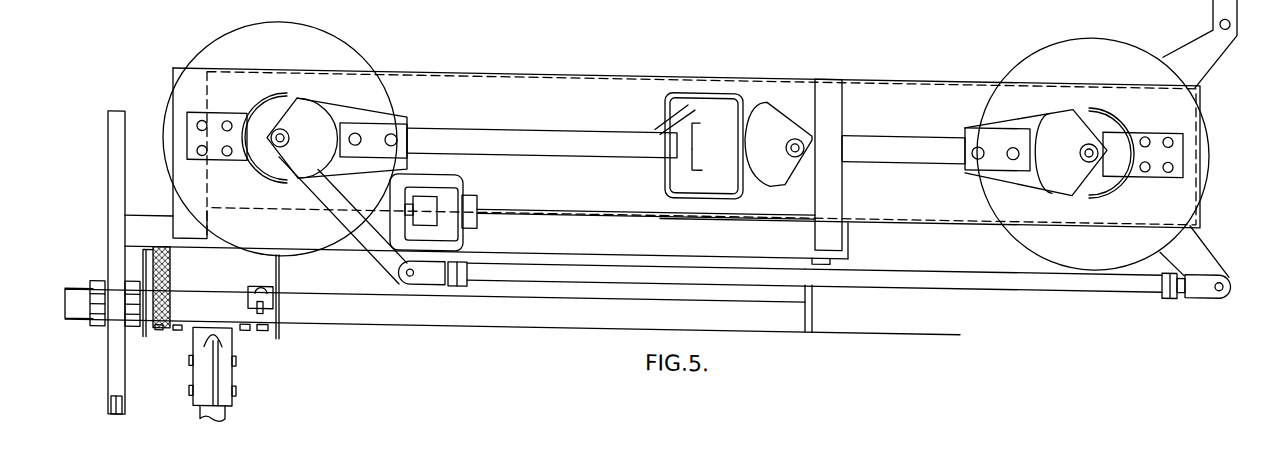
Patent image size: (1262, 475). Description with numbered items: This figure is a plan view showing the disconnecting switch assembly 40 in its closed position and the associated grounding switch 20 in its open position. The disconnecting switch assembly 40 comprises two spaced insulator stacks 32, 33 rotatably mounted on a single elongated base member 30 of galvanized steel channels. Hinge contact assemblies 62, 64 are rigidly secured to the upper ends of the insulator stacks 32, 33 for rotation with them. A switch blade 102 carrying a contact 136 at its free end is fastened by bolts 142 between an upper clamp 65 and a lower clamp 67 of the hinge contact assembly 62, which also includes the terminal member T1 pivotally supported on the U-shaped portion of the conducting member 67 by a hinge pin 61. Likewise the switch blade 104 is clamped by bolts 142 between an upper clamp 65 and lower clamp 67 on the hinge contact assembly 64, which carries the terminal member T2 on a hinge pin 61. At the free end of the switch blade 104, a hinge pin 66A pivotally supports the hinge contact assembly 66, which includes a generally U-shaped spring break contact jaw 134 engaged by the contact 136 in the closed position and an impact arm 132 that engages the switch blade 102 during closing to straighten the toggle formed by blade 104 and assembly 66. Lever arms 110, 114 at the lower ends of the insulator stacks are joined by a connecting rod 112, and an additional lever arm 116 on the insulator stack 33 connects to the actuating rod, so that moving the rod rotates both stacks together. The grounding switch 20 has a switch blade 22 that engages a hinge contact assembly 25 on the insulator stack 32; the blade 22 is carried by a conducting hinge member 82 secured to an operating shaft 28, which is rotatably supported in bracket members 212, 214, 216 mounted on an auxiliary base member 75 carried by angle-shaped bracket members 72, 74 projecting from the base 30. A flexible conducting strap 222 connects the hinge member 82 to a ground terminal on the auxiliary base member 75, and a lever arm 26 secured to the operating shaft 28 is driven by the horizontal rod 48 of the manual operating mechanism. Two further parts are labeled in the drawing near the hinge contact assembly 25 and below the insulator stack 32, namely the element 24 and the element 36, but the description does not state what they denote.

The grounding switch 20 is at (302, 374).
The switch blade 22 is at (224, 408).
The adjusting block 24 is at (472, 192).
The hinge contact assembly 25 is at (495, 238).
The lever arm 26 is at (109, 409).
The operating shaft 28 is at (455, 322).
The base member 30 is at (512, 72).
The insulator stack 32 is at (343, 34).
The insulator stack 33 is at (1122, 21).
The lever arm 36 is at (340, 223).
The disconnecting switch assembly 40 is at (637, 58).
The rod 48 is at (110, 149).
The hinge pin 61 is at (276, 143).
The hinge contact assembly 62 is at (297, 144).
The hinge contact assembly 64 is at (1047, 141).
The upper clamp 65 is at (405, 116).
The hinge contact assembly 66 is at (755, 144).
The hinge pin 66A is at (794, 146).
The lower clamp 67 is at (360, 164).
The bracket member 72 is at (173, 75).
The bracket member 74 is at (843, 87).
The auxiliary base member 75 is at (567, 220).
The conducting hinge member 82 is at (223, 374).
The switch blade 102 is at (510, 129).
The switch blade 104 is at (915, 129).
The lever arm 110 is at (380, 259).
The connecting rod 112 is at (1088, 276).
The lever arm 114 is at (1197, 229).
The lever arm 116 is at (1200, 45).
The impact arm 132 is at (660, 113).
The break contact jaw 134 is at (717, 83).
The contact 136 is at (680, 151).
The bolts 142 is at (390, 130).
The bracket member 212 is at (280, 331).
The bracket member 214 is at (812, 297).
The bracket member 216 is at (145, 338).
The flexible conducting strap 222 is at (172, 265).
The terminal member T1 is at (220, 117).
The terminal member T2 is at (1157, 116).